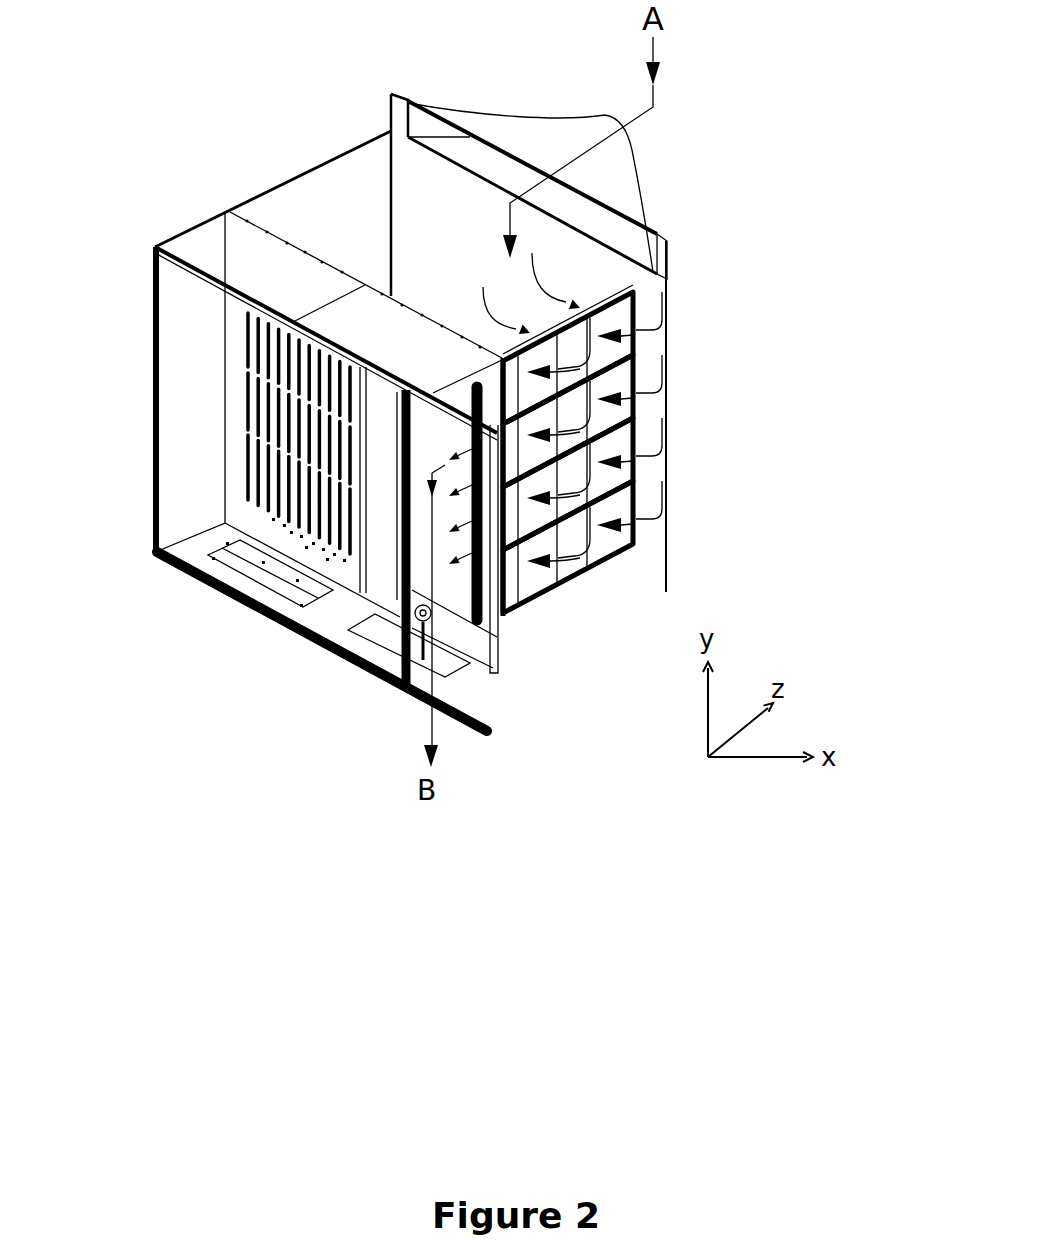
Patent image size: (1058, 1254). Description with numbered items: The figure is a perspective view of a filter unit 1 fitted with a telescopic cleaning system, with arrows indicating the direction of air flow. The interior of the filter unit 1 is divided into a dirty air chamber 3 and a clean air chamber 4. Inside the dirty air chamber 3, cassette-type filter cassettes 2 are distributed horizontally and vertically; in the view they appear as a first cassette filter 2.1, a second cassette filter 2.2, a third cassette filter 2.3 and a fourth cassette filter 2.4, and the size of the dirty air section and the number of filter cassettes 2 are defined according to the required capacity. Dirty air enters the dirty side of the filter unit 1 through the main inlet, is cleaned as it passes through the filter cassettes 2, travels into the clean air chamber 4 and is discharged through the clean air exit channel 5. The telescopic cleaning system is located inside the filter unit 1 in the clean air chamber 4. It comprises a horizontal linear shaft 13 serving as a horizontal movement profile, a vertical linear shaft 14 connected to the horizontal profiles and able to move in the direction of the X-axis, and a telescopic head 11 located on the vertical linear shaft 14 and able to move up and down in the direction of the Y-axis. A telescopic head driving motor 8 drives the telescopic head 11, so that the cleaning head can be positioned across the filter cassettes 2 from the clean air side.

The filter unit 1 is at (257, 118).
The filter cassettes 2 is at (236, 348).
The first cassette filter 2.1 is at (708, 273).
The second cassette filter 2.2 is at (708, 322).
The third cassette filter 2.3 is at (708, 377).
The fourth cassette filter 2.4 is at (708, 453).
The dirty air chamber 3 is at (358, 173).
The clean air chamber 4 is at (173, 333).
The clean air exit channel 5 is at (250, 572).
The telescopic head driving motor 8 is at (500, 637).
The telescopic head 11 is at (500, 605).
The horizontal linear shaft 13 is at (297, 640).
The vertical linear shaft 14 is at (397, 557).